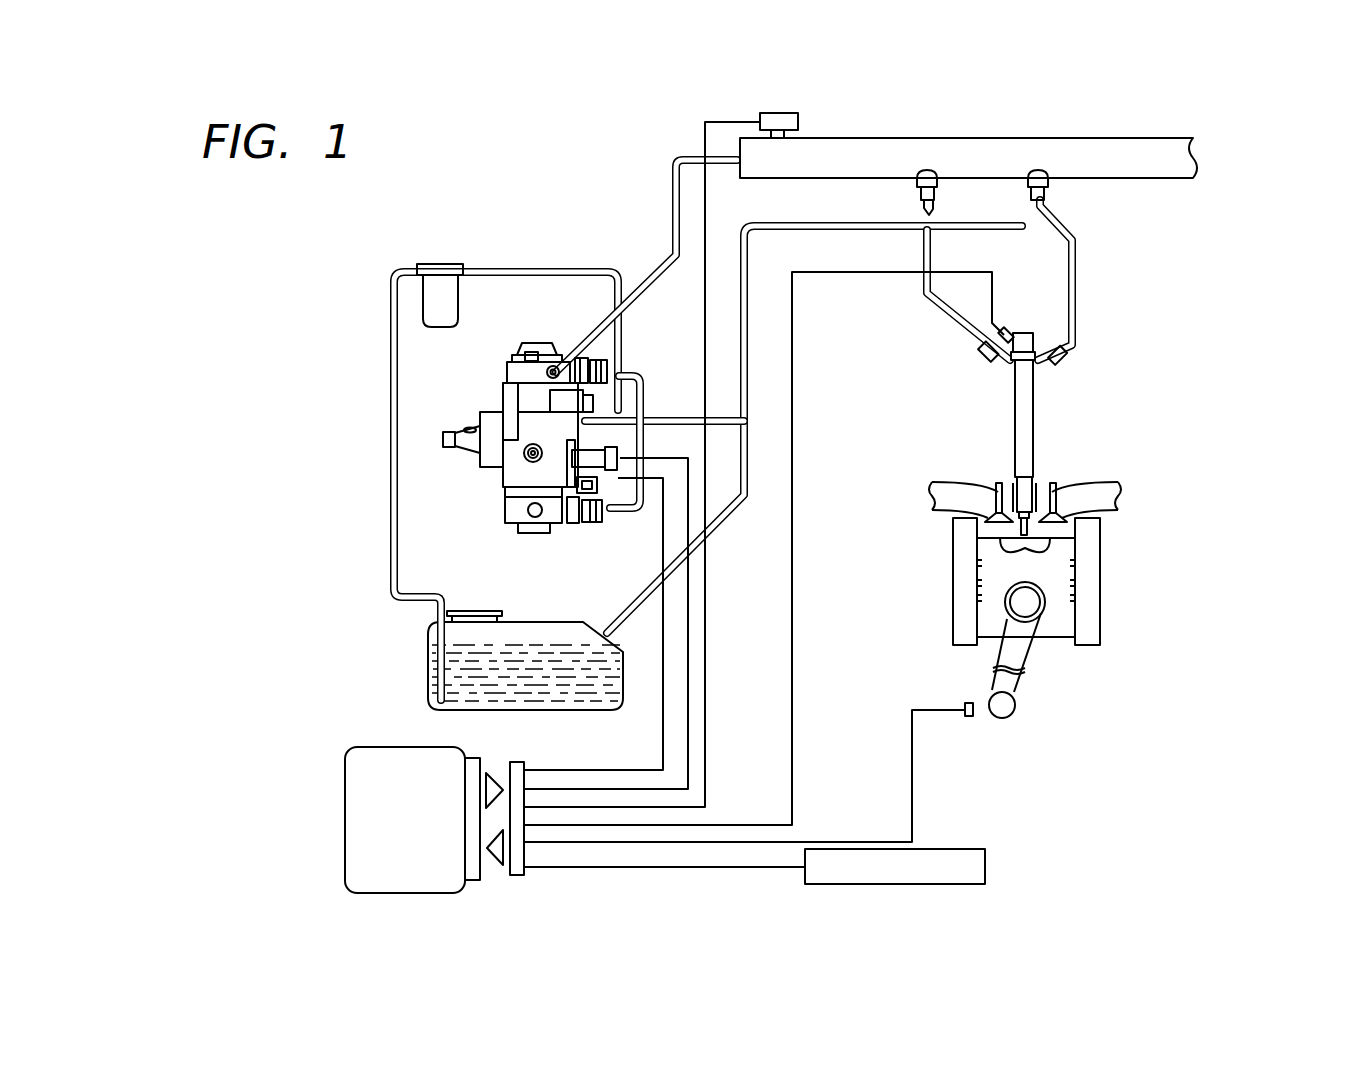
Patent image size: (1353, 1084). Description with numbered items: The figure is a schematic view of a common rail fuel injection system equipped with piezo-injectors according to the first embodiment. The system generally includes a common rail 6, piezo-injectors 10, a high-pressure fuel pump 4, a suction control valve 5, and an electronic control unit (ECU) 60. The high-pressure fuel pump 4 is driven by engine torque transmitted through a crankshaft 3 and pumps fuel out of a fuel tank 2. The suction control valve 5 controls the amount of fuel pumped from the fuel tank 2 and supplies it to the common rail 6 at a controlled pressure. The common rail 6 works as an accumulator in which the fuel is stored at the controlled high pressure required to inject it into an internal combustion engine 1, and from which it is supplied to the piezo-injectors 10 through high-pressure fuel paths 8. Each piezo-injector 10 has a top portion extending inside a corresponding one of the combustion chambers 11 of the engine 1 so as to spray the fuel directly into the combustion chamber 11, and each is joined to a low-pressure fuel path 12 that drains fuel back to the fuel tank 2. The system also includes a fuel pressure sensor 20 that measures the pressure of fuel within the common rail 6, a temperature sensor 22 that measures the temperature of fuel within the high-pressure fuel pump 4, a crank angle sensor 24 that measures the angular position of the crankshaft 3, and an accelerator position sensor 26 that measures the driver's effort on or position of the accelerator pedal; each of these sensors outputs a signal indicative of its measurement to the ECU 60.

The internal combustion engine 1 is at (1081, 600).
The fuel tank 2 is at (538, 622).
The crankshaft 3 is at (1015, 706).
The high-pressure fuel pump 4 is at (536, 345).
The suction control valve 5 is at (620, 457).
The common rail 6 is at (1125, 136).
The high-pressure fuel paths 8 is at (1078, 262).
The piezo-injectors 10 is at (1035, 425).
The combustion chambers 11 is at (1065, 530).
The low-pressure fuel path 12 is at (800, 222).
The fuel pressure sensor 20 is at (798, 113).
The temperature sensor 22 is at (612, 491).
The crank angle sensor 24 is at (970, 719).
The accelerator position sensor 26 is at (987, 868).
The electronic control unit (ECU) 60 is at (365, 747).